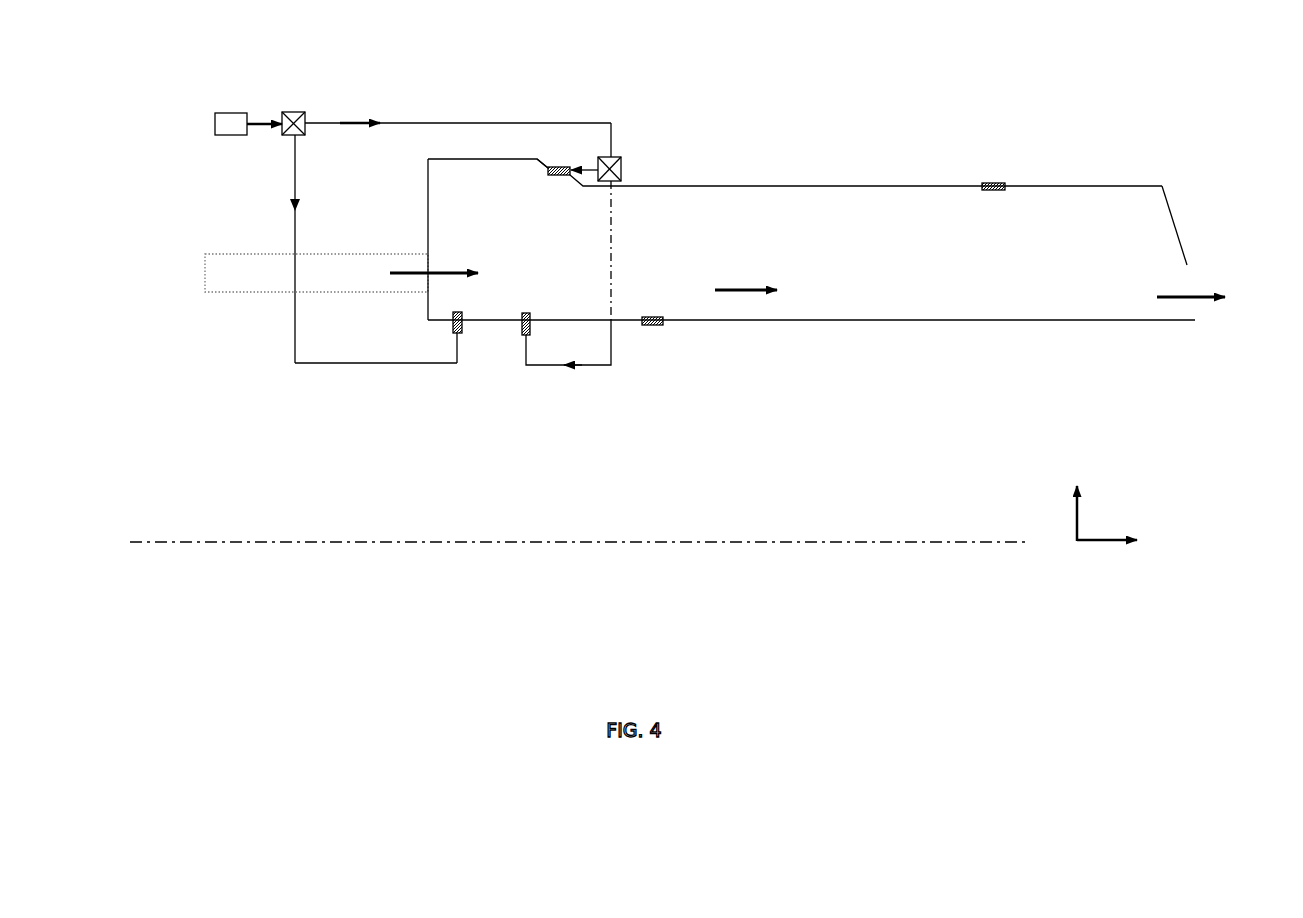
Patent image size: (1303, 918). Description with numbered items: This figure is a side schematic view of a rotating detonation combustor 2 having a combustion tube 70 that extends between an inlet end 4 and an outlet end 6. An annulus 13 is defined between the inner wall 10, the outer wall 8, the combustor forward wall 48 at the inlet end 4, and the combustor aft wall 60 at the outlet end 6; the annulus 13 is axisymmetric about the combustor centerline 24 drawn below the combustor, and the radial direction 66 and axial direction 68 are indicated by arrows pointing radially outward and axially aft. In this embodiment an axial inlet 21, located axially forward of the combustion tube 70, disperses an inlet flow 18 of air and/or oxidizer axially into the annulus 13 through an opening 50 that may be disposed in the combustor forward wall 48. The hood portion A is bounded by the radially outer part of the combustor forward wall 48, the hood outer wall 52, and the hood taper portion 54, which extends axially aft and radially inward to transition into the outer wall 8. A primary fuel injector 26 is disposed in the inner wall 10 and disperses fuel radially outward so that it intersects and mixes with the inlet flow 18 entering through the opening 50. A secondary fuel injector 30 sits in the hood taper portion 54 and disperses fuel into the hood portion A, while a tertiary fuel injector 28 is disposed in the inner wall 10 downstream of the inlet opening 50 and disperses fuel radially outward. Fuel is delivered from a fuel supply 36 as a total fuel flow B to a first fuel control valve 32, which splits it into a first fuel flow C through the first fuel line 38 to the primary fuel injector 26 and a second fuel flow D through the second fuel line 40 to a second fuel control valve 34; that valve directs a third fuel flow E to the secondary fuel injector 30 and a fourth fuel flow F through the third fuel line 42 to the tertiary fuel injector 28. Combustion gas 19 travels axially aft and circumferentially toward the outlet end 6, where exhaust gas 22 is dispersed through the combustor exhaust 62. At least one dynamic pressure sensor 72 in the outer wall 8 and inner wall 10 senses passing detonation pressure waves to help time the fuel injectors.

The rotating detonation combustor 2 is at (148, 95).
The inlet end 4 is at (396, 191).
The outlet end 6 is at (1224, 245).
The outer wall 8 is at (780, 188).
The inner wall 10 is at (886, 320).
The annulus 13 is at (1005, 261).
The inlet flow 18 is at (410, 277).
The combustion gas 19 is at (736, 290).
The axial inlet 21 is at (345, 284).
The exhaust gas 22 is at (1190, 299).
The combustor centerline 24 is at (132, 541).
The primary fuel injector 26 is at (451, 331).
The tertiary fuel injector 28 is at (529, 318).
The secondary fuel injector 30 is at (557, 177).
The first fuel control valve 32 is at (284, 135).
The second fuel control valve 34 is at (621, 160).
The fuel supply 36 is at (228, 112).
The first fuel line 38 is at (293, 334).
The second fuel line 40 is at (432, 121).
The third fuel line 42 is at (612, 350).
The combustor forward wall 48 is at (428, 204).
The inlet opening 50 is at (434, 267).
The hood outer wall 52 is at (490, 160).
The hood taper portion 54 is at (541, 165).
The combustor aft wall 60 is at (1180, 222).
The combustor exhaust 62 is at (1156, 269).
The radial direction 66 is at (1075, 520).
The axial direction 68 is at (1100, 544).
The combustion tube 70 is at (913, 165).
The dynamic pressure sensor 72 is at (664, 325).
The hood portion A is at (498, 180).
The total fuel flow B is at (270, 116).
The first fuel flow C is at (290, 205).
The second fuel flow D is at (377, 116).
The third fuel flow E is at (583, 164).
The fourth fuel flow F is at (569, 368).